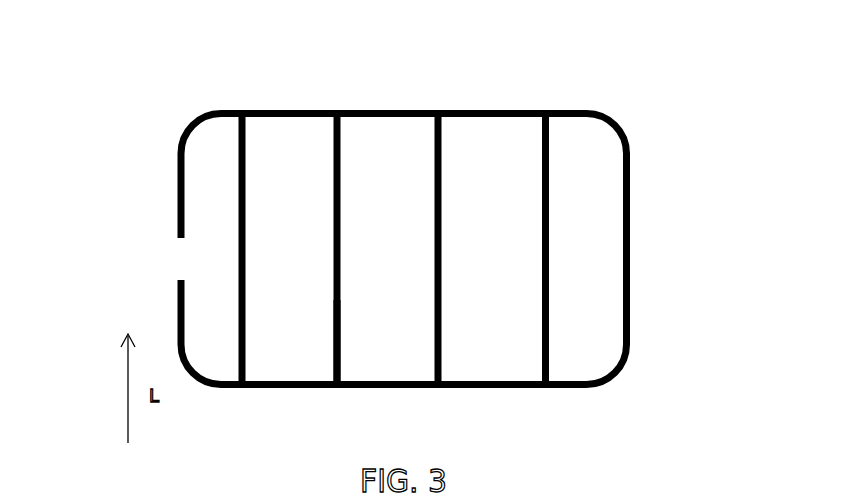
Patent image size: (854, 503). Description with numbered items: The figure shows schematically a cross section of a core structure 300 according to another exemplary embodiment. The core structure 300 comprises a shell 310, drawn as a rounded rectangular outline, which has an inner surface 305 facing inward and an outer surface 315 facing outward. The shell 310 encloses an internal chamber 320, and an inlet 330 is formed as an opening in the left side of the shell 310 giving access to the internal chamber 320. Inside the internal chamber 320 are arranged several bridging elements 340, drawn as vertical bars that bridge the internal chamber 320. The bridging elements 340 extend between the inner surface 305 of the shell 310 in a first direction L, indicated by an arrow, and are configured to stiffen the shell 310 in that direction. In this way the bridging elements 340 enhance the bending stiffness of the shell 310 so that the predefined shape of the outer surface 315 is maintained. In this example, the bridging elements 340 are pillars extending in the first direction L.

The core structure 300 is at (648, 84).
The inner surface 305 is at (460, 119).
The shell 310 is at (403, 110).
The outer surface 315 is at (309, 111).
The internal chamber 320 is at (528, 277).
The inlet 330 is at (185, 250).
The bridging elements 340 is at (343, 334).